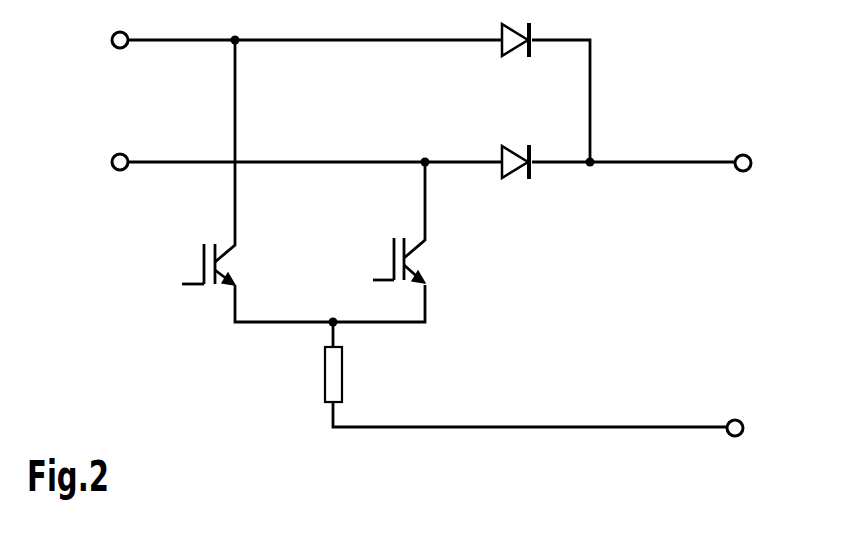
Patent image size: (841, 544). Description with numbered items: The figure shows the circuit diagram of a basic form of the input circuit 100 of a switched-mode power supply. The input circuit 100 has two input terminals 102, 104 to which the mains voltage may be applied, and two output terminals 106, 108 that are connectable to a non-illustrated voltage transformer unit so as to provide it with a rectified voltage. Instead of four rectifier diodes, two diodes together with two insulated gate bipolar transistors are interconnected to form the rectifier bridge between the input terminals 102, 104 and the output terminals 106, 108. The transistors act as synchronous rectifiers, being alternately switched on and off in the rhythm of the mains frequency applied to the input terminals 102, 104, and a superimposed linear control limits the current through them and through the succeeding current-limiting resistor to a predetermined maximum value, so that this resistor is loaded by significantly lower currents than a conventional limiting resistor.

The input circuit 100 is at (112, 387).
The input terminal 102 is at (111, 40).
The input terminal 104 is at (111, 162).
The output terminal 106 is at (741, 155).
The output terminal 108 is at (736, 420).